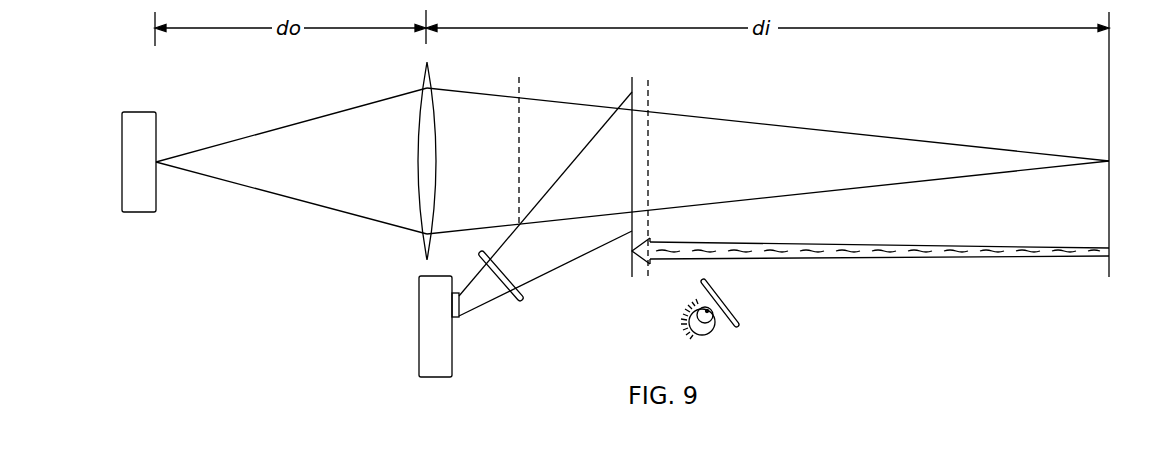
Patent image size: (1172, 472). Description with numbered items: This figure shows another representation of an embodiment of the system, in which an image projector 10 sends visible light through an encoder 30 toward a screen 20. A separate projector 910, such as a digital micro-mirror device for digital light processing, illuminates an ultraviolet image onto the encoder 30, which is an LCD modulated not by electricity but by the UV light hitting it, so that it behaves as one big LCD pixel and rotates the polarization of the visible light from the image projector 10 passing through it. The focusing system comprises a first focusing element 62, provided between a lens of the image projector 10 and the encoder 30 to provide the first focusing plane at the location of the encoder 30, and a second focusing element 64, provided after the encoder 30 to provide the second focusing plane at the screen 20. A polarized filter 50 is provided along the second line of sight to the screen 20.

The image projector 10 is at (140, 112).
The screen 20 is at (1110, 72).
The encoder 30 is at (632, 82).
The polarized filter 50 is at (740, 322).
The first focusing element 62 is at (522, 87).
The second focusing element 64 is at (650, 102).
The projector 910 is at (419, 287).